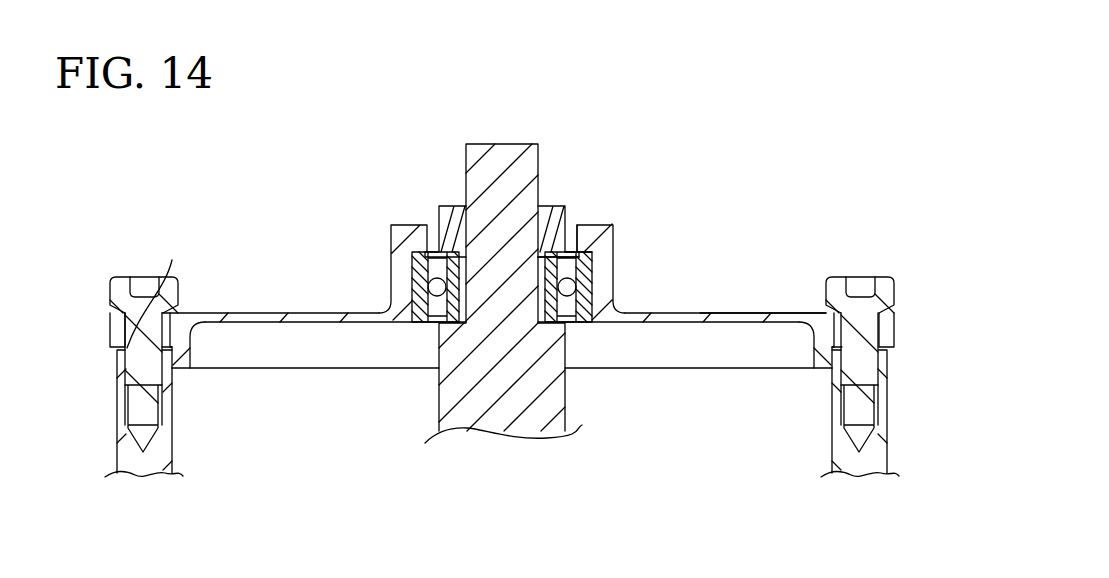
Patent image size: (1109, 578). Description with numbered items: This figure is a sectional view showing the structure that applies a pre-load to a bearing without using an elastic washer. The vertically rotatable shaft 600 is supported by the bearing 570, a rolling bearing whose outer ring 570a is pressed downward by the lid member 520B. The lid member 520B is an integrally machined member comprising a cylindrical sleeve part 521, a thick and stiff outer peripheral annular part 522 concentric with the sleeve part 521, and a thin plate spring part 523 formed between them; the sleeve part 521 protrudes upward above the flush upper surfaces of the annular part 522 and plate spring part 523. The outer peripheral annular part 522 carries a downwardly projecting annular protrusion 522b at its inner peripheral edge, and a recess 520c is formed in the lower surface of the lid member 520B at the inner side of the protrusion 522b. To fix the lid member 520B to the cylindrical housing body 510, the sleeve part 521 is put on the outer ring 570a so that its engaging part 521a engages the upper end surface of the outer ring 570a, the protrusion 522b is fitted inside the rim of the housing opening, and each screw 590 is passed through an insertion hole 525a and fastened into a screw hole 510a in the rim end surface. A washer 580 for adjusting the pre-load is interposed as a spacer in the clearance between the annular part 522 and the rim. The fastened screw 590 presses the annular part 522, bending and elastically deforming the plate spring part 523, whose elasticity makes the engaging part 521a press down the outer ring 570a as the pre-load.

The rotatable shaft 600 is at (439, 378).
The bearing 570 is at (435, 250).
The outer ring 570a is at (593, 287).
The sleeve part 521 is at (390, 240).
The engaging part 521a is at (592, 257).
The lid member 520B is at (496, 298).
The plate spring part 523 is at (748, 313).
The recess 520c is at (690, 368).
The insertion holes 525a is at (303, 302).
The outer peripheral annular part 522 is at (895, 330).
The protrusion 522b is at (174, 357).
The washer 580 is at (183, 350).
The screw 590 is at (123, 277).
The housing body 510 is at (117, 418).
The screw holes 510a is at (128, 398).